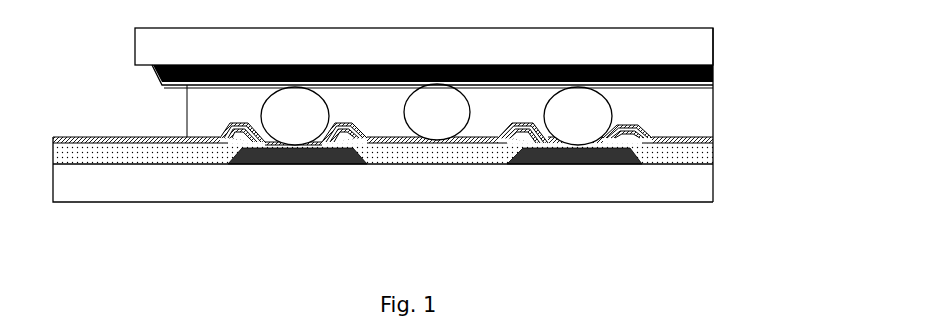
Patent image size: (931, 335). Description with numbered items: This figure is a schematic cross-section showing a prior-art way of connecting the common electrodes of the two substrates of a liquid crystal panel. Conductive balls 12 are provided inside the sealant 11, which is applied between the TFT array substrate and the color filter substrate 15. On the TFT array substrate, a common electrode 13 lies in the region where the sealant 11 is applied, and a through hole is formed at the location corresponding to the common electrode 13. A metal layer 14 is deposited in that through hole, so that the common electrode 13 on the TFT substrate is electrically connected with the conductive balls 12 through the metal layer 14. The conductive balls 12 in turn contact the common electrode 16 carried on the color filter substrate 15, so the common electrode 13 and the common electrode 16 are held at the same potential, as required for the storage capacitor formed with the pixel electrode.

The sealant 11 is at (482, 124).
The conductive balls 12 is at (437, 113).
The common electrode 13 is at (613, 157).
The metal layer 14 is at (643, 127).
The color filter substrate 15 is at (728, 43).
The common electrode 16 is at (713, 87).